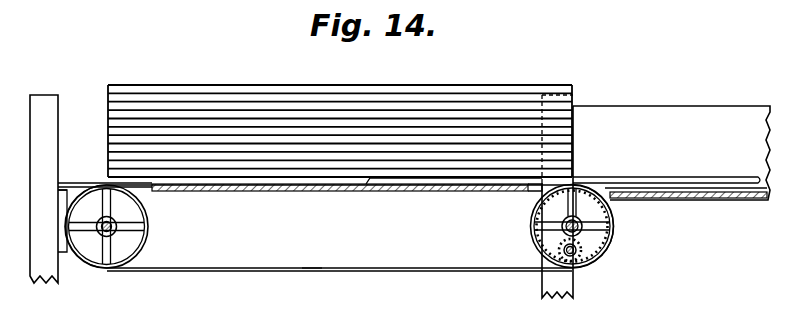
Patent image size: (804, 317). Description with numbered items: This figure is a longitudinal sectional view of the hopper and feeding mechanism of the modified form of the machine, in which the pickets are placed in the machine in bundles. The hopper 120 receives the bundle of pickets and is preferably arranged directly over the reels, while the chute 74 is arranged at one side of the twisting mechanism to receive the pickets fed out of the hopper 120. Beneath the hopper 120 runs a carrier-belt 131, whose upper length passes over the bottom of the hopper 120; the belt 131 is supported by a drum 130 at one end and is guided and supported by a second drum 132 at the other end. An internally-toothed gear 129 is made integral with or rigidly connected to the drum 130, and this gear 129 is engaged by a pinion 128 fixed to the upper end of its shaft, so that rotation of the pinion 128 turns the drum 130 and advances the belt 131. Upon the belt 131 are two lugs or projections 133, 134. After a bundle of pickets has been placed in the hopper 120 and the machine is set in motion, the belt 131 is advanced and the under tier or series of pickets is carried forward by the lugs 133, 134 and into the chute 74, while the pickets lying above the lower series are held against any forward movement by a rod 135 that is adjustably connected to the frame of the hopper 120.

The chute 74 is at (671, 163).
The hopper 120 is at (302, 188).
The pinion 128 is at (597, 258).
The internally-toothed gear 129 is at (533, 225).
The drum 130 is at (555, 226).
The carrier-belt 131 is at (340, 228).
The second drum 132 is at (148, 232).
The lug 133 is at (366, 190).
The lug 134 is at (309, 273).
The rod 135 is at (576, 173).